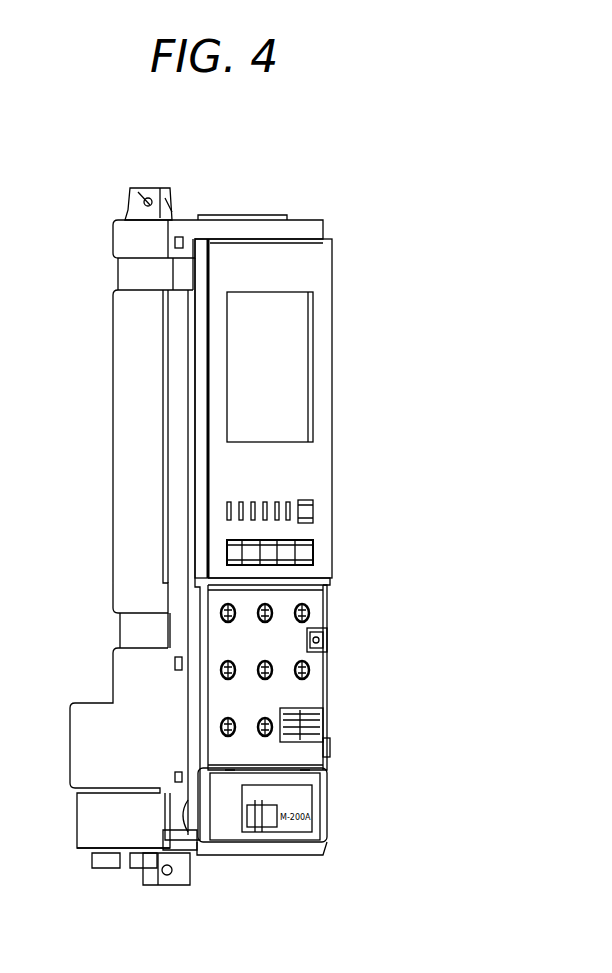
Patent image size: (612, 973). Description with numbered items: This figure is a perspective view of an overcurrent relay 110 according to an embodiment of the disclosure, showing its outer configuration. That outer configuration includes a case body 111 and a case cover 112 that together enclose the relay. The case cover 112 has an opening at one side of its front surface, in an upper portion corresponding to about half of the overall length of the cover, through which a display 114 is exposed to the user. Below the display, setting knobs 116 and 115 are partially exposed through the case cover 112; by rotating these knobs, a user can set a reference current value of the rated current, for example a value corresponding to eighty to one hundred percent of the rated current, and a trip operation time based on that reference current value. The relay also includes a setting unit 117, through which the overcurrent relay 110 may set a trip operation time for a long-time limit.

The overcurrent relay 110 is at (406, 515).
The case body 111 is at (112, 475).
The case cover 112 is at (332, 438).
The display 114 is at (285, 349).
The setting knob 115 is at (308, 607).
The setting knobs 116 is at (258, 618).
The setting unit 117 is at (335, 588).